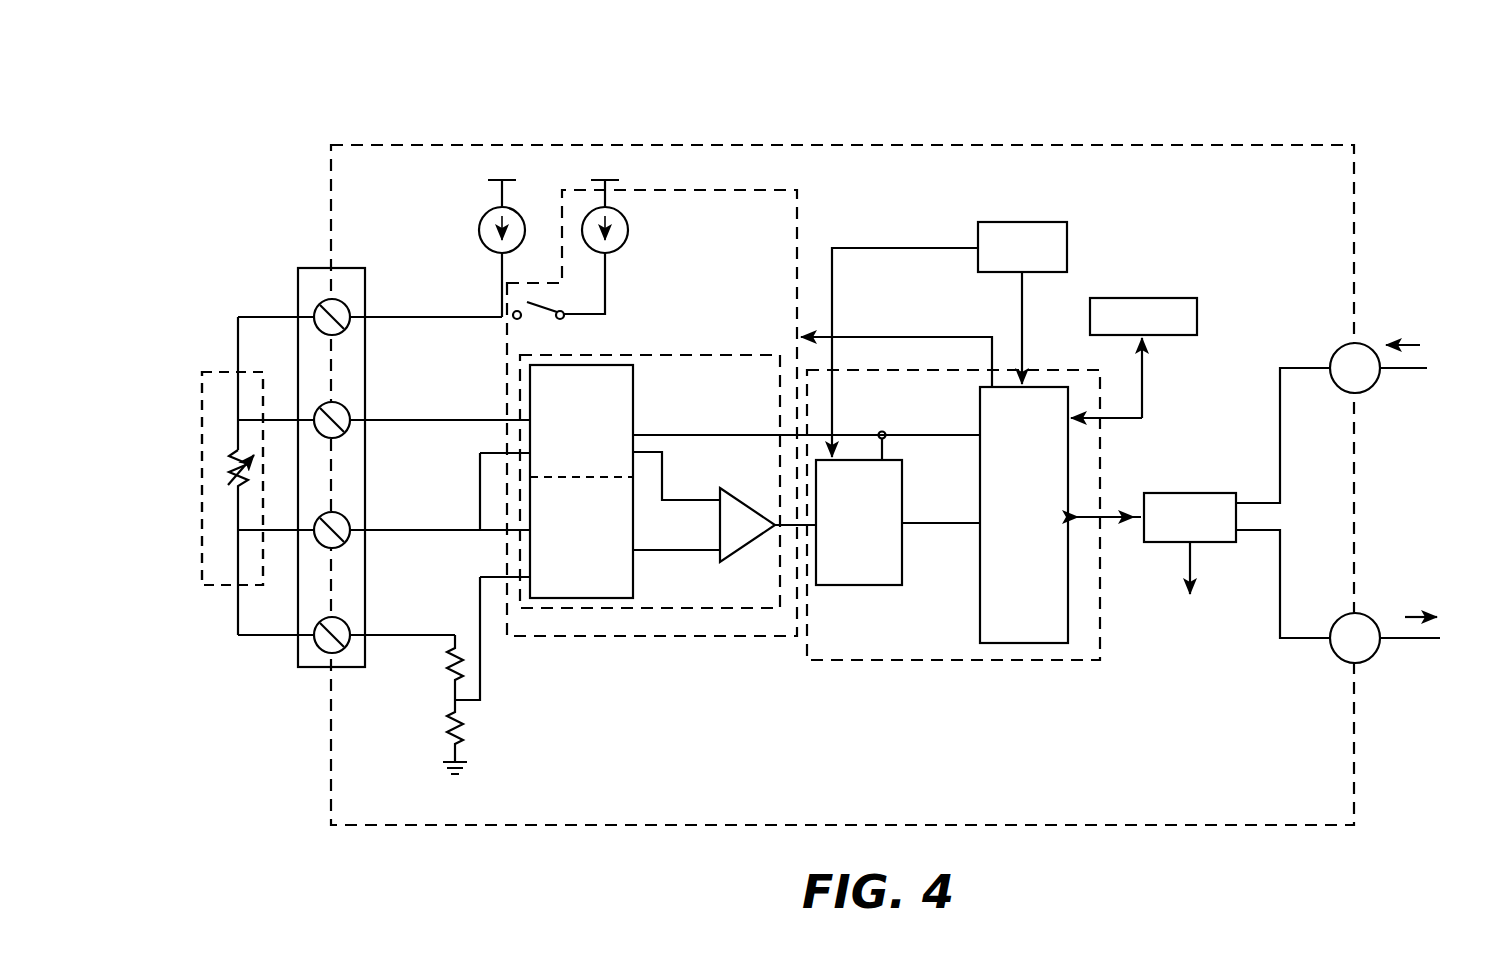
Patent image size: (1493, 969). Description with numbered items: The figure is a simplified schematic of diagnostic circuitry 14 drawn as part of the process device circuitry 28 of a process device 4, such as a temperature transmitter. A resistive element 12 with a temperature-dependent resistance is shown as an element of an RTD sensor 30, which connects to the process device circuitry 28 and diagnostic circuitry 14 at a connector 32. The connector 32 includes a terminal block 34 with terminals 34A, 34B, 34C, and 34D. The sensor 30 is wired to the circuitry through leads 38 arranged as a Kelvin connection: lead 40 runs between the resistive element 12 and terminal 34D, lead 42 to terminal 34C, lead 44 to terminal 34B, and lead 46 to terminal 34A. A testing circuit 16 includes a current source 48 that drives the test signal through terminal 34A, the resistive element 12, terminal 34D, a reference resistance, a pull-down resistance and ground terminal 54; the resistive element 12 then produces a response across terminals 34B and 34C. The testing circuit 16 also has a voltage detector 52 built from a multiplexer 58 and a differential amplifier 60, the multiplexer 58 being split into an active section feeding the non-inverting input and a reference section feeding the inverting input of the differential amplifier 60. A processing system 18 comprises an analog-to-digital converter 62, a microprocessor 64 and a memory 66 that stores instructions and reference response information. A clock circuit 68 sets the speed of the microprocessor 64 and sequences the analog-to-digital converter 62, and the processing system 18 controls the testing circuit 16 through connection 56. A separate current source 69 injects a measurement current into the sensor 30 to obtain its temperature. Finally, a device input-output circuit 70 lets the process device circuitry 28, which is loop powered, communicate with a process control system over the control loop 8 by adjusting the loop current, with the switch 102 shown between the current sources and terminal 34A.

The process device 4 is at (1256, 92).
The control loop 8 is at (1400, 368).
The resistive element 12 is at (215, 472).
The diagnostic circuitry 14 is at (672, 637).
The testing circuit 16 is at (752, 188).
The processing system 18 is at (908, 660).
The process device circuitry 28 is at (1112, 142).
The RTD sensor 30 is at (228, 590).
The connector 32 is at (320, 262).
The terminal block 34 is at (304, 502).
The terminal 34A is at (331, 308).
The terminal 34B is at (331, 411).
The terminal 34C is at (332, 521).
The terminal 34D is at (318, 667).
The leads 38 is at (234, 340).
The lead 40 is at (245, 635).
The lead 42 is at (270, 528).
The lead 44 is at (268, 420).
The lead 46 is at (283, 317).
The current source 48 is at (620, 210).
The voltage detector 52 is at (565, 608).
The ground terminal 54 is at (470, 765).
The connection 56 is at (868, 337).
The multiplexer 58 is at (635, 418).
The differential amplifier 60 is at (745, 552).
The analog-to-digital converter 62 is at (902, 575).
The microprocessor 64 is at (1020, 643).
The memory 66 is at (1130, 298).
The clock circuit 68 is at (1020, 222).
The current source 69 is at (482, 222).
The device input-output circuit 70 is at (1180, 493).
The switch 102 is at (542, 304).